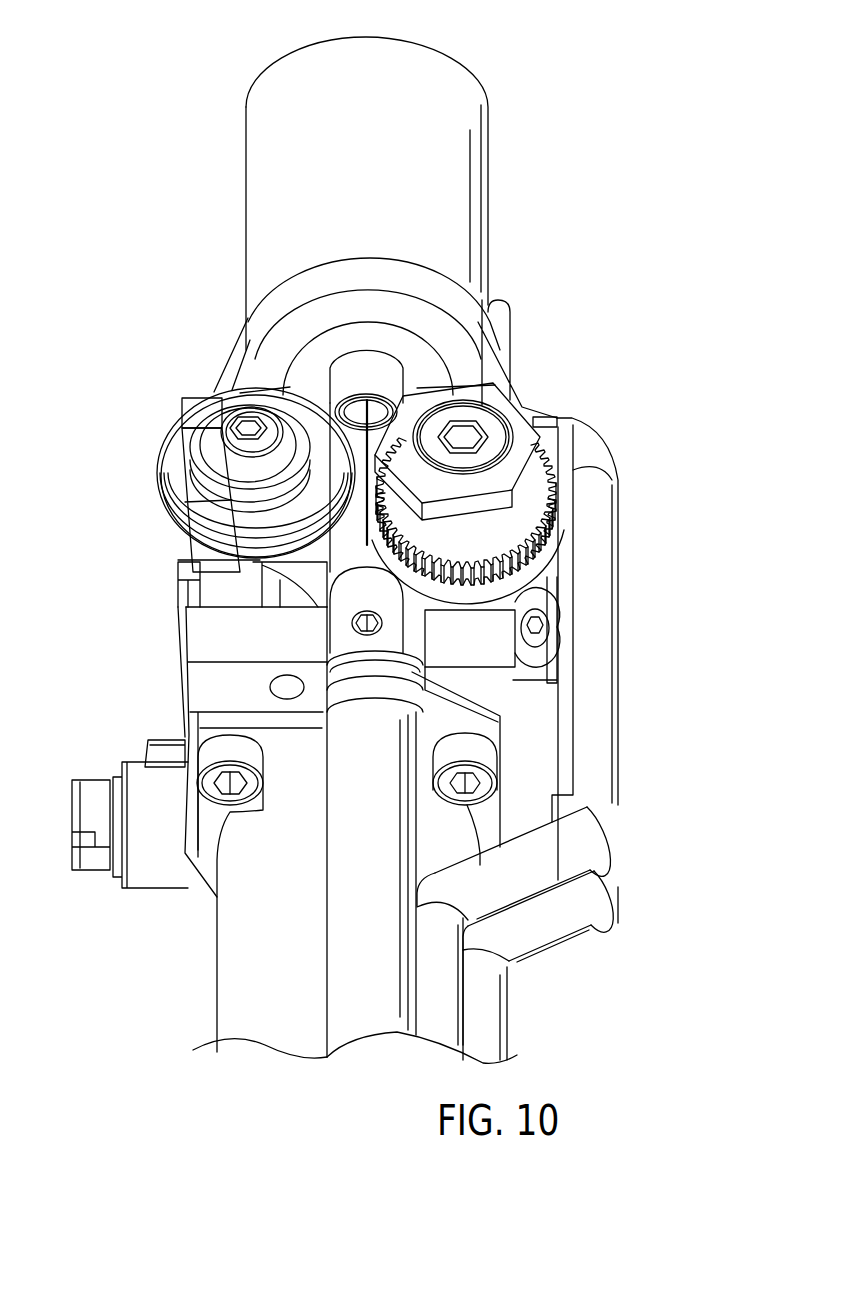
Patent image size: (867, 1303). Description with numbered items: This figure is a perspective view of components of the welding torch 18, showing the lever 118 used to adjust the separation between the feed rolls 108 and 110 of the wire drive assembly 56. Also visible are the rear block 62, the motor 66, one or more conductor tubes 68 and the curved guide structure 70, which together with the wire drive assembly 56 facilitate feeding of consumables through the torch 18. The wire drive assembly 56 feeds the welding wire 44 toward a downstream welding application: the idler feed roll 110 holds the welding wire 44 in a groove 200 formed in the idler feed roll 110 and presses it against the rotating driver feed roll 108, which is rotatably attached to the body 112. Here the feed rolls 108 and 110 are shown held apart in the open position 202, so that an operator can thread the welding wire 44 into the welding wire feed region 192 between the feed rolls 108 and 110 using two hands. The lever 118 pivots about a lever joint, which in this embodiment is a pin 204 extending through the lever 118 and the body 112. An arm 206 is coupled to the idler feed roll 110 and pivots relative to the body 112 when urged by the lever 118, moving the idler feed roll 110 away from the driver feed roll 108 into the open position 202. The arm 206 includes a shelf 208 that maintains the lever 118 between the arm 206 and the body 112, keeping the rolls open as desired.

The torch 18 is at (672, 656).
The welding wire 44 is at (367, 411).
The wire drive assembly 56 is at (607, 428).
The rear block 62 is at (257, 140).
The motor 66 is at (228, 971).
The conductor tubes 68 is at (610, 873).
The curved guide structure 70 is at (357, 1030).
The driver feed roll 108 is at (540, 518).
The idler feed roll 110 is at (160, 456).
The body 112 is at (198, 633).
The lever 118 is at (196, 396).
The welding wire feed region 192 is at (351, 545).
The groove 200 is at (167, 520).
The open position 202 is at (222, 320).
The pin 204 is at (282, 684).
The arm 206 is at (175, 587).
The shelf 208 is at (181, 570).